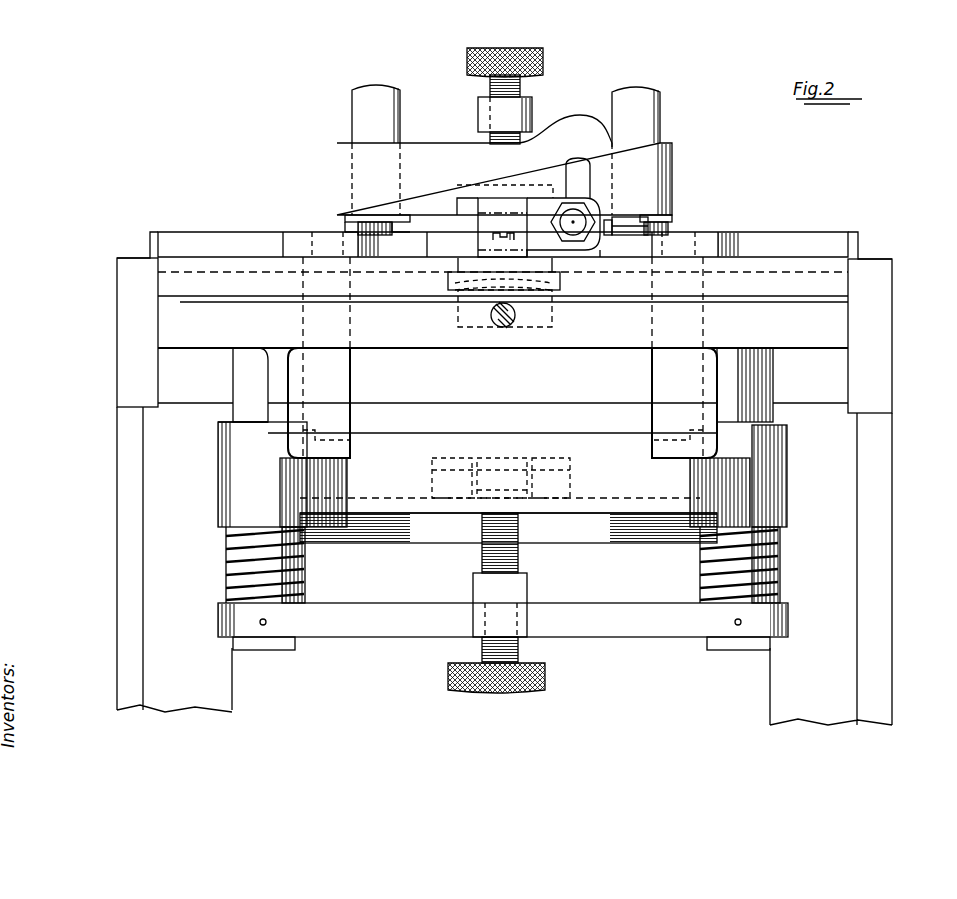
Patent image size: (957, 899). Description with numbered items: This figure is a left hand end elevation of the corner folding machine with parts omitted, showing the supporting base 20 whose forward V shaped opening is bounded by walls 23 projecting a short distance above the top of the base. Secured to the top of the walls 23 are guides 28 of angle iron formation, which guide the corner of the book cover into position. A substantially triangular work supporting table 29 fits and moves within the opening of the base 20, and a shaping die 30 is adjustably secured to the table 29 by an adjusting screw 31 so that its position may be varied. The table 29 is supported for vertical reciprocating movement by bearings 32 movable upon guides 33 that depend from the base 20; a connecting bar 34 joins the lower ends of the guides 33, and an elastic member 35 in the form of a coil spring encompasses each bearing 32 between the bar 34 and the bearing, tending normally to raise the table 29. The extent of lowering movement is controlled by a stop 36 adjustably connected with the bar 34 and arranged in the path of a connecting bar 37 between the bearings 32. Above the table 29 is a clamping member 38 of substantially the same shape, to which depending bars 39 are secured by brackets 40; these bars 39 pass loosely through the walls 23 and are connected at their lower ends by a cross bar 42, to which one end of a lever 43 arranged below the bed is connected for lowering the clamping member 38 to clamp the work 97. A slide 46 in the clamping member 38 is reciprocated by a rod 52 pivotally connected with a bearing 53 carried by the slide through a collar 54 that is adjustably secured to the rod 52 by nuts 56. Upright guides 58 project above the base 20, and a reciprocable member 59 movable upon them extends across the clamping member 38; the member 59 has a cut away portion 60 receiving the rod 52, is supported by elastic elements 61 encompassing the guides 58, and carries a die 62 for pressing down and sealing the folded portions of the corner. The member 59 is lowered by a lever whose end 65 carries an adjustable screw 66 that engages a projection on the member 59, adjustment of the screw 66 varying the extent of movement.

The supporting base 20 is at (114, 340).
The walls 23 is at (887, 290).
The guides 28 is at (188, 243).
The work supporting table 29 is at (590, 332).
The shaping die 30 is at (473, 318).
The adjusting screw 31 is at (505, 324).
The bearings 32 is at (233, 474).
The guides 33 is at (245, 381).
The connecting bar 34 is at (657, 630).
The elastic member 35 is at (305, 570).
The stop 36 is at (480, 648).
The connecting bar 37 is at (607, 452).
The clamping member 38 is at (765, 285).
The depending bars 39 is at (301, 317).
The brackets 40 is at (293, 234).
The cross bar 42 is at (608, 533).
The lever 43 is at (520, 457).
The slide 46 is at (553, 282).
The rod 52 is at (580, 229).
The bearing 53 is at (487, 222).
The collar 54 is at (550, 213).
The nuts 56 is at (592, 210).
The upright guides 58 is at (398, 98).
The reciprocable member 59 is at (344, 163).
The cut away portion 60 is at (592, 178).
The elastic elements 61 is at (388, 215).
The die 62 is at (457, 204).
The lever end 65 is at (533, 110).
The adjustable screw 66 is at (520, 50).
The work 97 is at (216, 298).